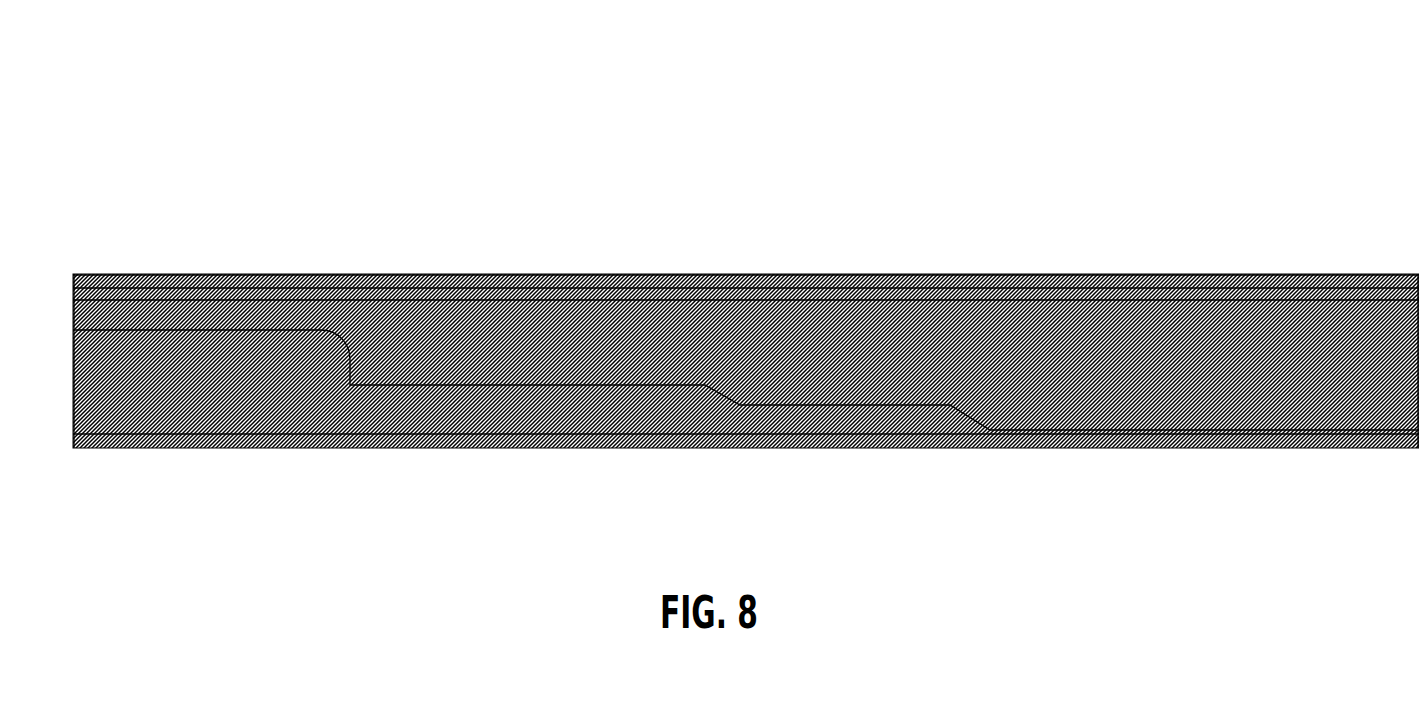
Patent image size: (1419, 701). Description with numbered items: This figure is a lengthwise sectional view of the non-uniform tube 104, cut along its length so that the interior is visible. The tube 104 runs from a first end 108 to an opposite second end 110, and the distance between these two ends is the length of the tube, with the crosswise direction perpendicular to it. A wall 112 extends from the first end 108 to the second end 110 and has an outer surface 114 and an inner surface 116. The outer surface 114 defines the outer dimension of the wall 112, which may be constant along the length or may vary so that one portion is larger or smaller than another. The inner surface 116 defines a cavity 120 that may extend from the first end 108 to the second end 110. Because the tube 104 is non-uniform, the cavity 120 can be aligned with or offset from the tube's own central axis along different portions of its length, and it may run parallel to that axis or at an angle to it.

The non-uniform tube 104 is at (262, 88).
The first end 108 is at (73, 308).
The second end 110 is at (1418, 262).
The wall 112 is at (408, 280).
The outer surface 114 is at (575, 262).
The inner surface 116 is at (162, 355).
The cavity 120 is at (264, 305).